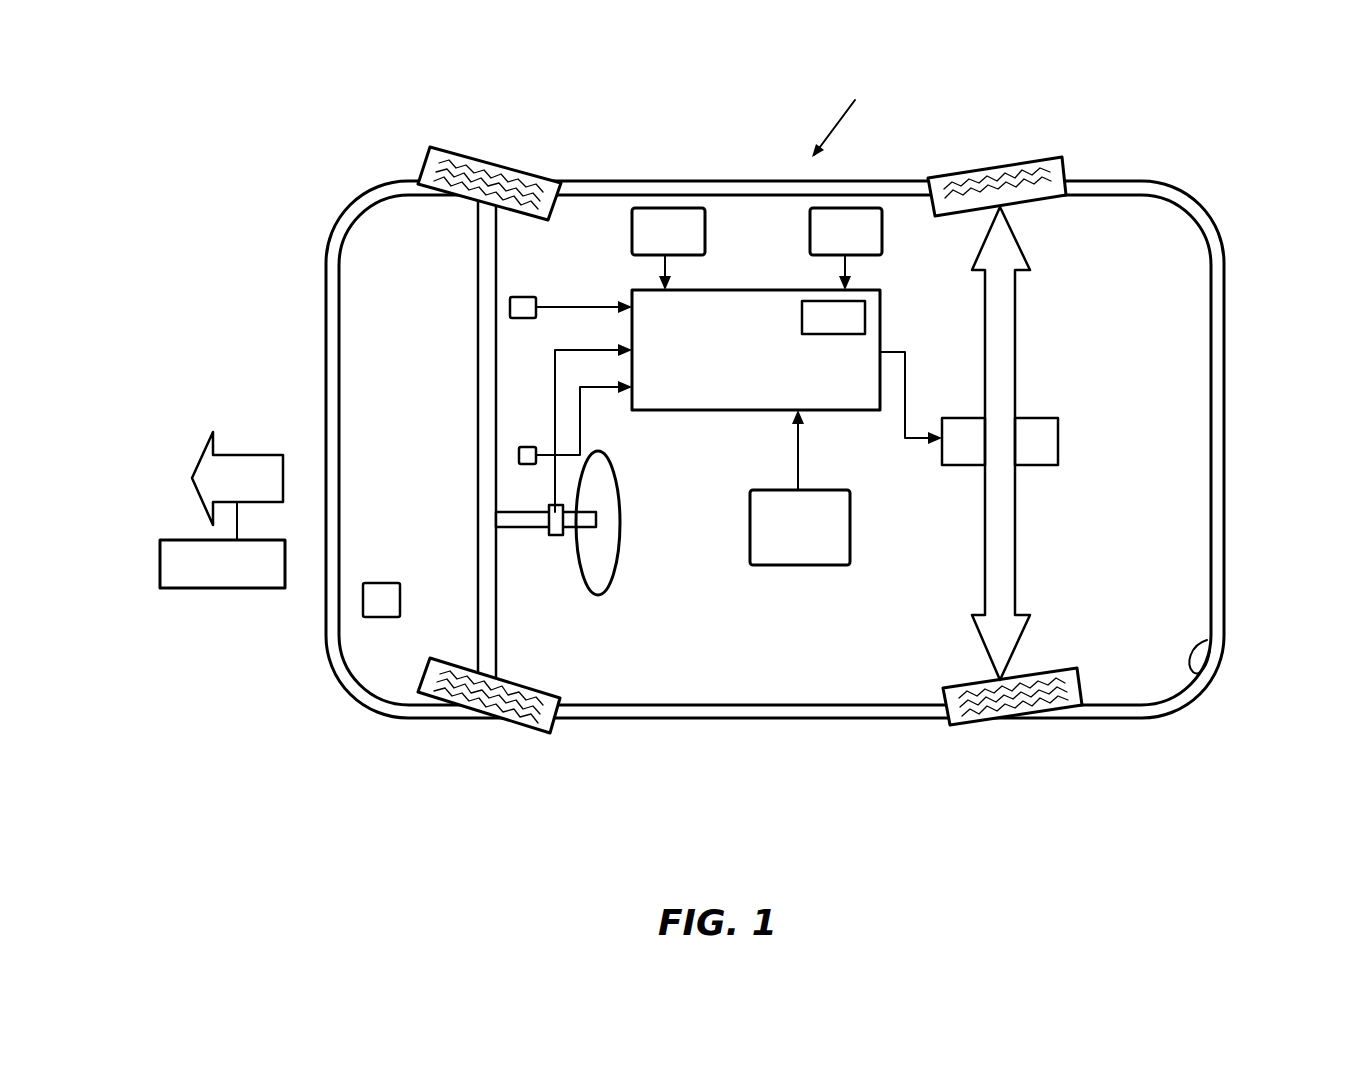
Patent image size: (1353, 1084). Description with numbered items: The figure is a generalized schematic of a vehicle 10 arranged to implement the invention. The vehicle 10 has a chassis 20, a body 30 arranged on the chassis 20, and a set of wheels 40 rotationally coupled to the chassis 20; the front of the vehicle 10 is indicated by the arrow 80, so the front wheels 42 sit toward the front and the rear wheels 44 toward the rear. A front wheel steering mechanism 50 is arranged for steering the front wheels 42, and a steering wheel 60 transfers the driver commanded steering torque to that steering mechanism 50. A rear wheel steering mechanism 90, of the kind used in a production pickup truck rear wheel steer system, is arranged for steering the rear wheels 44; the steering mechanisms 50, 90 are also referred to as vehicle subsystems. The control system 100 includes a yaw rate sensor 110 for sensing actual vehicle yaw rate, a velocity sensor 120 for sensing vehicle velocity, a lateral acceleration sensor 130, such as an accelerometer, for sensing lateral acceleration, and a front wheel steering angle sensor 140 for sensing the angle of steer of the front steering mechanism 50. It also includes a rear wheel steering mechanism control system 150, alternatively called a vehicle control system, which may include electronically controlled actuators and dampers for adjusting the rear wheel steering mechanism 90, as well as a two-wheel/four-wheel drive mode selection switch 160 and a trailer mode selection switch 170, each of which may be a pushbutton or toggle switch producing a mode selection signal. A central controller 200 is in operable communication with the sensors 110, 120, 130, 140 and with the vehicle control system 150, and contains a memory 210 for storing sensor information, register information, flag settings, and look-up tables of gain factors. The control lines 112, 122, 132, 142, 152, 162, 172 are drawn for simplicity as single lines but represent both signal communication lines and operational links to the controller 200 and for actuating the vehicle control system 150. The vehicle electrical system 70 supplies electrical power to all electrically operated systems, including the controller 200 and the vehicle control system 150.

The vehicle 10 is at (824, 501).
The chassis 20 is at (1207, 642).
The body 30 is at (1223, 557).
The set of wheels 40 is at (524, 760).
The front wheels 42 is at (452, 150).
The rear wheels 44 is at (1042, 160).
The front wheel steering mechanism 50 is at (528, 532).
The steering wheel 60 is at (620, 545).
The vehicle electrical system 70 is at (362, 607).
The arrow 80 is at (158, 562).
The rear wheel steering mechanism 90 is at (1043, 416).
The control system 100 is at (841, 110).
The yaw rate sensor 110 is at (663, 206).
The control line 112 is at (663, 268).
The velocity sensor 120 is at (822, 567).
The control line 122 is at (797, 450).
The lateral acceleration sensor 130 is at (838, 206).
The control line 132 is at (848, 268).
The front wheel steering angle sensor 140 is at (556, 552).
The control line 142 is at (553, 368).
The rear wheel steering mechanism control system 150 is at (962, 416).
The control line 152 is at (905, 448).
The 2WD/4WD mode selection switch 160 is at (508, 307).
The control line 162 is at (568, 303).
The trailer mode selection switch 170 is at (505, 446).
The control line 172 is at (548, 452).
The central controller 200 is at (752, 288).
The memory 210 is at (866, 315).